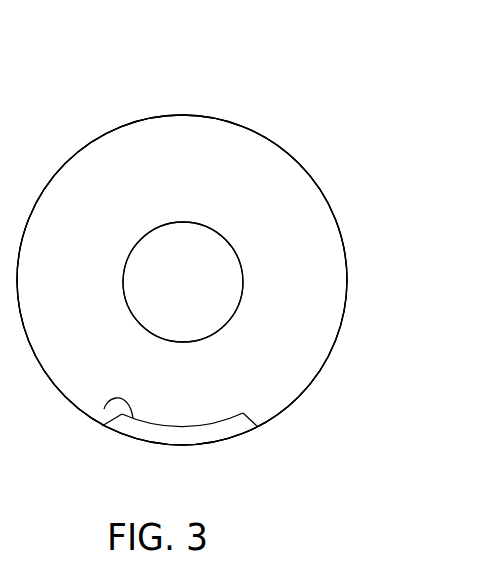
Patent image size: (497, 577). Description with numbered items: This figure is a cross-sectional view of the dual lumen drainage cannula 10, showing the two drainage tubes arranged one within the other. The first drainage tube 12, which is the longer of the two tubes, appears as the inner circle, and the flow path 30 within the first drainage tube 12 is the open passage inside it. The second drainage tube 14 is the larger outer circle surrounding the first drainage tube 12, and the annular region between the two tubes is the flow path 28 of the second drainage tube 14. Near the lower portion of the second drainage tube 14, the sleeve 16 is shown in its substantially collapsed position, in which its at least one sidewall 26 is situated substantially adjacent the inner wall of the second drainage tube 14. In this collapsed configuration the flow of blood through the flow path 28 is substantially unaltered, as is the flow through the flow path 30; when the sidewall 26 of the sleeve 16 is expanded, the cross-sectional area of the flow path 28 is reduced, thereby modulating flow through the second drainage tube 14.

The dual lumen drainage cannula 10 is at (303, 100).
The first drainage tube 12 is at (183, 223).
The second drainage tube 14 is at (347, 281).
The sleeve 16 is at (233, 430).
The sidewall 26 is at (104, 409).
The flow path of second drainage tube 28 is at (298, 332).
The flow path of first drainage tube 30 is at (197, 294).